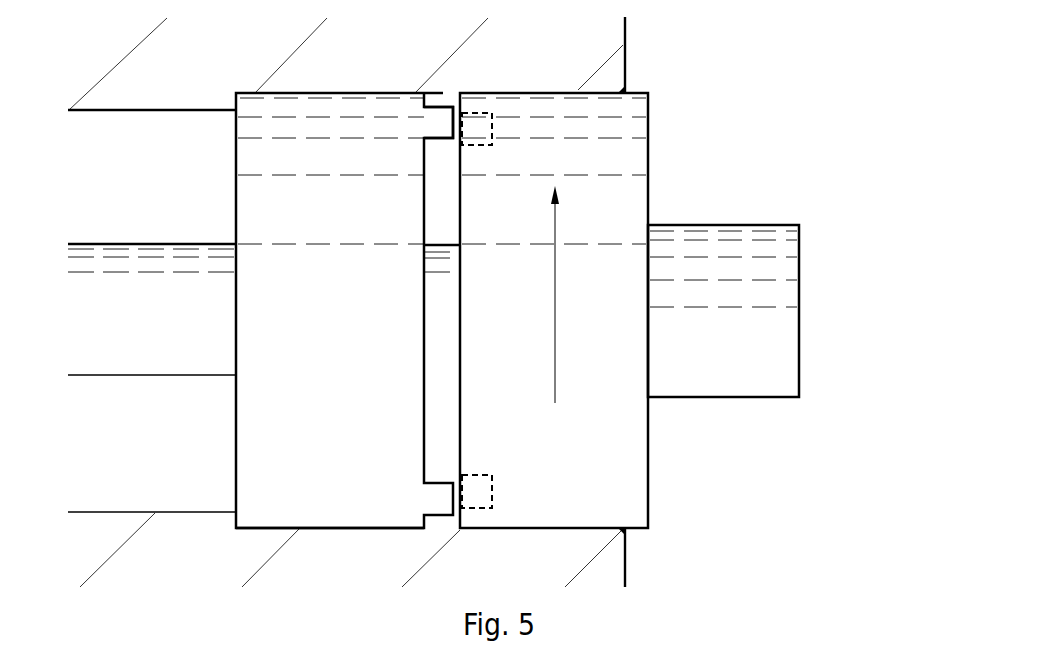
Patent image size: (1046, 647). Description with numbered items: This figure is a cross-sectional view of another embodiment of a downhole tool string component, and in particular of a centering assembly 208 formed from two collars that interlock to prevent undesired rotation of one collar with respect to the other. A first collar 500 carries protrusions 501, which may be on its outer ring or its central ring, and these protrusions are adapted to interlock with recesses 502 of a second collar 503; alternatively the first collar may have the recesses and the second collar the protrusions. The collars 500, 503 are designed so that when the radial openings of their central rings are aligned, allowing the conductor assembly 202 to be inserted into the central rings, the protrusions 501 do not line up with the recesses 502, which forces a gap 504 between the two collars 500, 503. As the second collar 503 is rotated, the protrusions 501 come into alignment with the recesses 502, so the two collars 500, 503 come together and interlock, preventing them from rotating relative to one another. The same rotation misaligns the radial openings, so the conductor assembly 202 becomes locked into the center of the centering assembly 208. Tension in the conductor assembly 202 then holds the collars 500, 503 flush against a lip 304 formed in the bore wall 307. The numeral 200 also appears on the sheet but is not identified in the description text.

The assembly 200 is at (694, 641).
The conductor assembly 202 is at (763, 298).
The centering assembly 208 is at (545, 53).
The lip 304 is at (237, 518).
The bore wall 307 is at (160, 545).
The first collar 500 is at (282, 192).
The protrusions 501 is at (442, 120).
The recesses 502 is at (478, 124).
The second collar 503 is at (615, 143).
The gap 504 is at (442, 427).